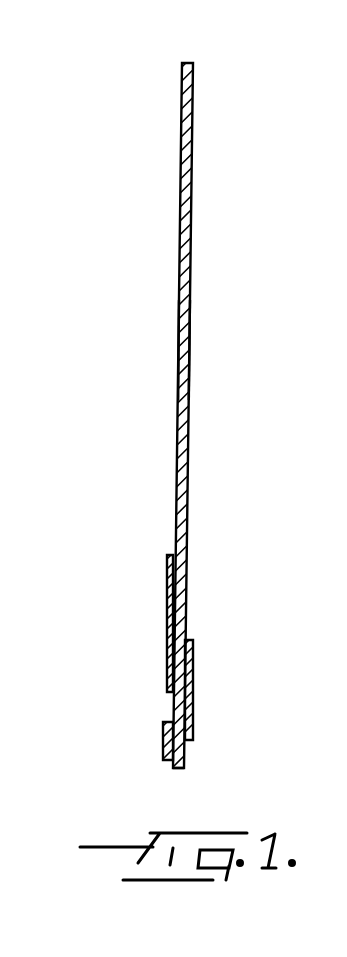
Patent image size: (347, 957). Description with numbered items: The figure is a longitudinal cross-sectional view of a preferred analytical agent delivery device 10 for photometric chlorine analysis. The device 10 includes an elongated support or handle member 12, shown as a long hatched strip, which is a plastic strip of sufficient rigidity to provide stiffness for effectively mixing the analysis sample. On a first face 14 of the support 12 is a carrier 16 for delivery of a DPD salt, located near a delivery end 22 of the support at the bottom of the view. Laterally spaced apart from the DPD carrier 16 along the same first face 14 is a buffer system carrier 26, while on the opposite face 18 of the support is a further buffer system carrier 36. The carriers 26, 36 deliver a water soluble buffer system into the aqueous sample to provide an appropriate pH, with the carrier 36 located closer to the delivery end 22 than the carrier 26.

The analytical agent delivery device 10 is at (163, 151).
The support or handle member 12 is at (196, 291).
The first face 14 is at (178, 356).
The opposite face 18 is at (190, 394).
The carrier 26 is at (166, 618).
The carrier 36 is at (195, 672).
The carrier 16 is at (162, 750).
The delivery end 22 is at (184, 762).